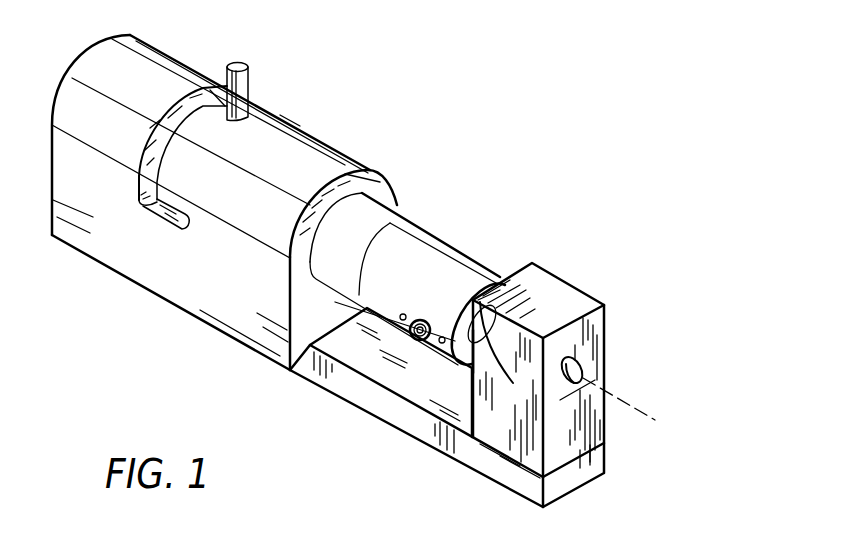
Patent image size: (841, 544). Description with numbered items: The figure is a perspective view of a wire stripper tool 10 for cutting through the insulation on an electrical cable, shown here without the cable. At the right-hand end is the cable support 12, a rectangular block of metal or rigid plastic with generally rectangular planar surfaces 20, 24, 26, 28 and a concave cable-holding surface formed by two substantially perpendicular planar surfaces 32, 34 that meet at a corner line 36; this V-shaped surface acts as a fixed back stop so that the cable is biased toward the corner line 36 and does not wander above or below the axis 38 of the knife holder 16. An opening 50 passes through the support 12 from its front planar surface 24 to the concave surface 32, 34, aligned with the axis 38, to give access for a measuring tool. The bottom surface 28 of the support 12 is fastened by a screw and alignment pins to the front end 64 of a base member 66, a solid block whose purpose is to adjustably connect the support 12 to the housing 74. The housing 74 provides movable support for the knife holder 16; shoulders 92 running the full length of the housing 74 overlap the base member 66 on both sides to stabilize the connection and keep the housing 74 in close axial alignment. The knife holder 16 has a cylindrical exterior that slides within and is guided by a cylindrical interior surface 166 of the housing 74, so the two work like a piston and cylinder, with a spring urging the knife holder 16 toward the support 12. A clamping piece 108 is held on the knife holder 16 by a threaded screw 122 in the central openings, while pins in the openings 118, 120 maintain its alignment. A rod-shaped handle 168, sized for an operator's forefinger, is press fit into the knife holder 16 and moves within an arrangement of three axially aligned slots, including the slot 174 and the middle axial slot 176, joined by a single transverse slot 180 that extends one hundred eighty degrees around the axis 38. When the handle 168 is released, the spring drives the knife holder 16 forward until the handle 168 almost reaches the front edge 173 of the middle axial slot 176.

The wire stripper tool 10 is at (605, 178).
The cable support 12 is at (605, 320).
The knife holder 16 is at (430, 226).
The planar surface 20 is at (547, 285).
The front planar surface 24 is at (594, 428).
The planar surface 26 is at (503, 446).
The bottom surface 28 is at (534, 480).
The planar surface 32 is at (510, 320).
The planar surface 34 is at (458, 458).
The corner line 36 is at (500, 366).
The axis 38 is at (620, 397).
The opening 50 is at (580, 358).
The front end 64 is at (572, 474).
The base member 66 is at (410, 392).
The housing 74 is at (158, 270).
The shoulder 92 is at (242, 318).
The clamping piece 108 is at (445, 277).
The opening 118 is at (443, 340).
The opening 120 is at (399, 314).
The threaded screw 122 is at (411, 337).
The cylindrical interior surface 166 is at (378, 170).
The handle 168 is at (250, 74).
The front edge 173 is at (283, 116).
The axial slot 174 is at (158, 210).
The middle axial slot 176 is at (221, 110).
The transverse slot 180 is at (138, 172).